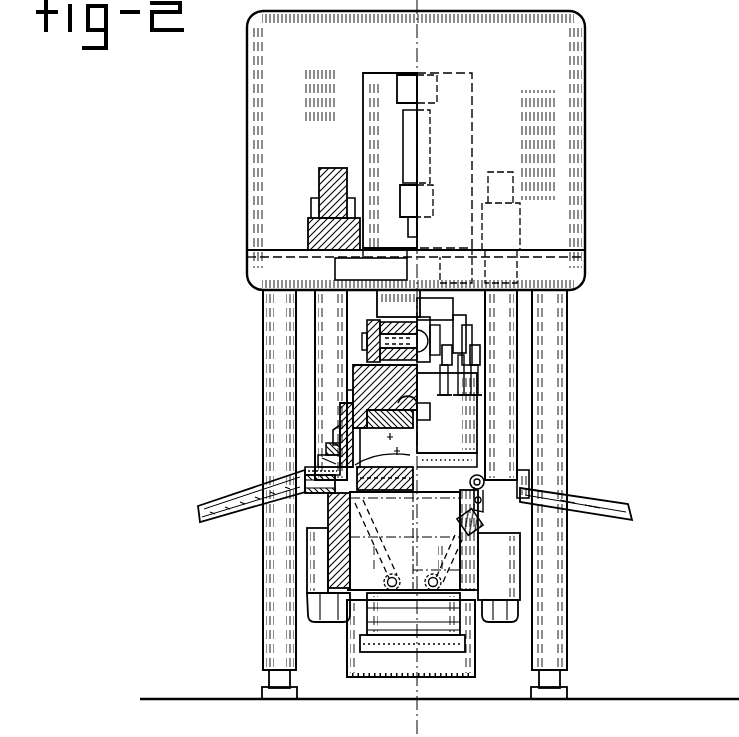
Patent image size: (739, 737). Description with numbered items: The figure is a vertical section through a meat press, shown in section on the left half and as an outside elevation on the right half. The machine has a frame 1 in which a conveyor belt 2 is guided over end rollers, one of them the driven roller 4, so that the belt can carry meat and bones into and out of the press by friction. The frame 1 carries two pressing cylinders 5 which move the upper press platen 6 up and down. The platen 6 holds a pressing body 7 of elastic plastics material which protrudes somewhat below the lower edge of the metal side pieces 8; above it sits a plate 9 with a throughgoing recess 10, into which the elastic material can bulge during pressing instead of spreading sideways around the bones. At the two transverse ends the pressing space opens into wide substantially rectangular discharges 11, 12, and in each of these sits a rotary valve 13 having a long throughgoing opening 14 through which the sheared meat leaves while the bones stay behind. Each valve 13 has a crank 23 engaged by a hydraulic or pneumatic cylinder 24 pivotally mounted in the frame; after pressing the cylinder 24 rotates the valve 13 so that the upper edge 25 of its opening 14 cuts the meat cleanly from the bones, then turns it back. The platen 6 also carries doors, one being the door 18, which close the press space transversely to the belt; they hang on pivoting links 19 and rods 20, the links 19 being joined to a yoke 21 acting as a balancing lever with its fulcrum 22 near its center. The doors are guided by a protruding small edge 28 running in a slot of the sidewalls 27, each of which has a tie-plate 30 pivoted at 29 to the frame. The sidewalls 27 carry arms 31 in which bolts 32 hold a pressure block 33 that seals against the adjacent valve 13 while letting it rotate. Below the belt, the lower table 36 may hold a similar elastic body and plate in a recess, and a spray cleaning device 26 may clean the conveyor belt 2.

The frame 1 is at (291, 650).
The conveyor belt 2 is at (370, 712).
The end roller 4 is at (403, 622).
The pressing cylinders 5 is at (412, 128).
The upper press platen 6 is at (355, 373).
The pressing body 7 is at (415, 425).
The metal side pieces 8 is at (357, 390).
The plate 9 is at (413, 400).
The recess 10 is at (410, 403).
The discharge 11 is at (297, 500).
The discharge 12 is at (203, 512).
The rotary valves 13 is at (337, 527).
The throughgoing opening 14 is at (320, 505).
The door 18 is at (470, 418).
The pivoting links 19 is at (477, 355).
The rods 20 is at (470, 385).
The yoke 21 is at (375, 318).
The fulcrum 22 is at (365, 346).
The crank 23 is at (480, 492).
The cylinder 24 is at (480, 530).
The upper edge 25 is at (357, 462).
The spray cleaning device 26 is at (463, 663).
The sidewall 27 is at (343, 413).
The protruding small edge 28 is at (347, 400).
The pivot 29 is at (310, 467).
The tie-plate 30 is at (327, 444).
The arms 31 is at (333, 433).
The bolts 32 is at (320, 454).
The pressure block 33 is at (352, 445).
The lower table 36 is at (406, 541).